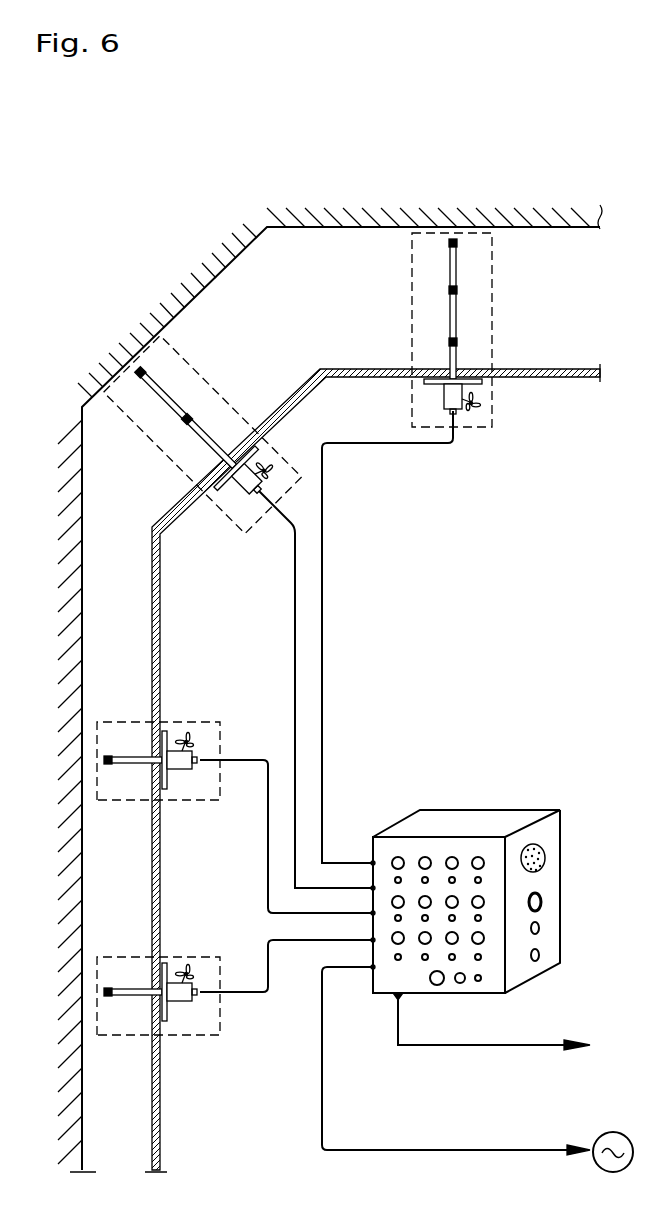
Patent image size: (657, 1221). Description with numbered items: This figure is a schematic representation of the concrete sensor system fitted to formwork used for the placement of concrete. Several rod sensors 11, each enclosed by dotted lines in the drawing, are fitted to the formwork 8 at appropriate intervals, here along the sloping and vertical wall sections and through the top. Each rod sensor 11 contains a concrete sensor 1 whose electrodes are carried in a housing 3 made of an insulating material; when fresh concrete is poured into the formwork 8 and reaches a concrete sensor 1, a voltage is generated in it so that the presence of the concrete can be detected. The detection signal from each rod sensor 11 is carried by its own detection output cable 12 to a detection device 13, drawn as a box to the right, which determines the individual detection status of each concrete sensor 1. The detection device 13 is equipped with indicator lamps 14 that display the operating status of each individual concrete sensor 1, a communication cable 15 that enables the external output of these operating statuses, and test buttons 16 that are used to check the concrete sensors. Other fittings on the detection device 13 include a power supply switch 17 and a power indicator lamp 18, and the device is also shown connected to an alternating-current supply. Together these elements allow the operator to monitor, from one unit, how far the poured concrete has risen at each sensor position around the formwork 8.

The concrete sensor 1 is at (449, 290).
The housing 3 is at (457, 313).
The formwork 8 is at (557, 377).
The rod sensor 11 is at (477, 427).
The detection output cable 12 is at (323, 583).
The detection device 13 is at (500, 808).
The indicator lamp 14 is at (478, 856).
The communication cable 15 is at (507, 1047).
The test button 16 is at (396, 960).
The power supply switch 17 is at (481, 978).
The power indicator lamp 18 is at (463, 983).